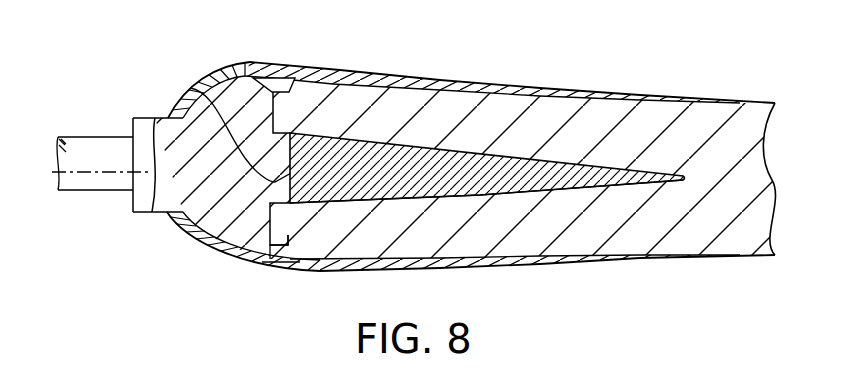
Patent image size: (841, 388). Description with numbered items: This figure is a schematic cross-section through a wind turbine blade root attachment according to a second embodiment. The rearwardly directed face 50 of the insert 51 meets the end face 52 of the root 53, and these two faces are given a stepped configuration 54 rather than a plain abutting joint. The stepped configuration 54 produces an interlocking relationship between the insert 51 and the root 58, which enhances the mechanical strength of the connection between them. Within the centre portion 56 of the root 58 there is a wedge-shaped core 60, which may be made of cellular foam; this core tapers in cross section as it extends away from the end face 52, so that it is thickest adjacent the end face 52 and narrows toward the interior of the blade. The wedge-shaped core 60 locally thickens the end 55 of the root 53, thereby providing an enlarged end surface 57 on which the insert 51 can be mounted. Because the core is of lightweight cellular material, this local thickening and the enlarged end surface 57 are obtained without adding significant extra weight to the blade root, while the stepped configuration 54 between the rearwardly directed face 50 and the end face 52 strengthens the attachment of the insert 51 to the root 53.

The rearwardly directed face 50 is at (263, 108).
The insert 51 is at (200, 218).
The end face 52 is at (278, 108).
The root 53 is at (612, 108).
The stepped configuration 54 is at (277, 230).
The end 55 is at (422, 244).
The centre portion 56 is at (190, 88).
The enlarged end surface 57 is at (277, 263).
The root 58 is at (520, 166).
The wedge-shaped core 60 is at (475, 191).